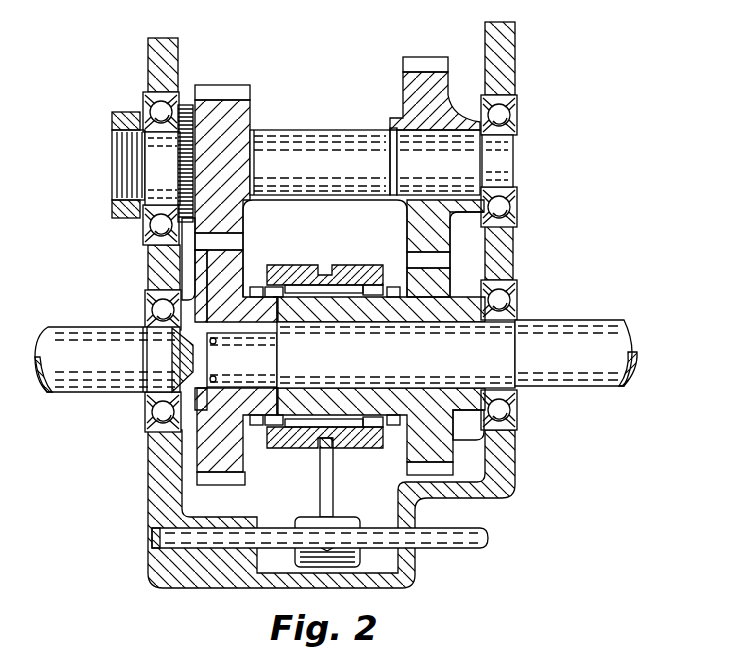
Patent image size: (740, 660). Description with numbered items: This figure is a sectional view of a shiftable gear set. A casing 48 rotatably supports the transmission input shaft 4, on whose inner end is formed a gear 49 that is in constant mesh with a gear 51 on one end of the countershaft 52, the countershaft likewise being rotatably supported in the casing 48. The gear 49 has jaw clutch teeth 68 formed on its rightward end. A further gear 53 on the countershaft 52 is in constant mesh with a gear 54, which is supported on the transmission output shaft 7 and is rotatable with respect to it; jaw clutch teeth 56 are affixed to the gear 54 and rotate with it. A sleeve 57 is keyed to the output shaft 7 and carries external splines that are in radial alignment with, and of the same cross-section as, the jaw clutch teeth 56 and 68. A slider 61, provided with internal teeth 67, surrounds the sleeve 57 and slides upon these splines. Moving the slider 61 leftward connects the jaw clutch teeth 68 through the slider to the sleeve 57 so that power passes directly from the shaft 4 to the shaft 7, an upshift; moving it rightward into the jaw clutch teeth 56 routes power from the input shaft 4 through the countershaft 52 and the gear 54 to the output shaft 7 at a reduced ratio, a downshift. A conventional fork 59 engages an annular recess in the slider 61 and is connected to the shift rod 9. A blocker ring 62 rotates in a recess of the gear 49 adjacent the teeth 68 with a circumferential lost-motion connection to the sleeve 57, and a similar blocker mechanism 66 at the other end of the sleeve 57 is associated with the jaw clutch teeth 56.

The transmission input shaft 4 is at (77, 388).
The transmission output shaft 7 is at (597, 370).
The shift rod 9 is at (470, 550).
The casing 48 is at (516, 460).
The gear 49 is at (222, 477).
The gear 51 is at (240, 92).
The countershaft 52 is at (325, 140).
The gear 53 is at (412, 63).
The gear 54 is at (433, 448).
The jaw clutch teeth 56 is at (393, 285).
The sleeve 57 is at (363, 310).
The fork 59 is at (327, 480).
The slider 61 is at (340, 267).
The blocker ring 62 is at (270, 290).
The blocker mechanism 66 is at (372, 290).
The internal teeth 67 is at (303, 285).
The jaw clutch teeth 68 is at (255, 285).